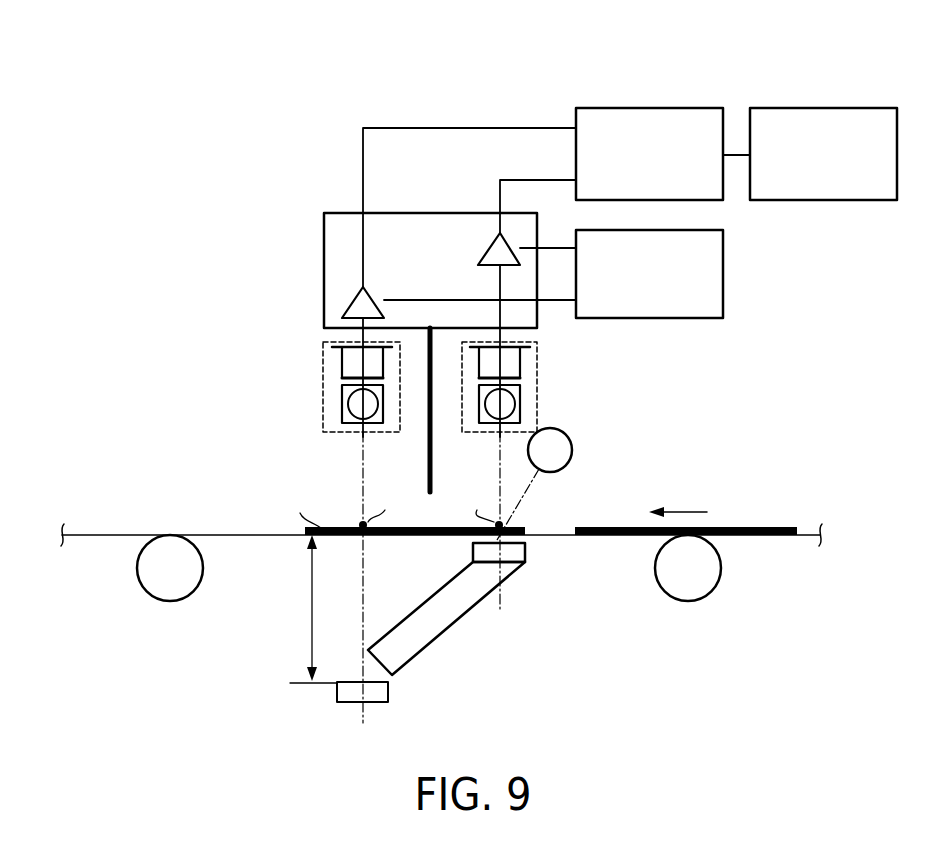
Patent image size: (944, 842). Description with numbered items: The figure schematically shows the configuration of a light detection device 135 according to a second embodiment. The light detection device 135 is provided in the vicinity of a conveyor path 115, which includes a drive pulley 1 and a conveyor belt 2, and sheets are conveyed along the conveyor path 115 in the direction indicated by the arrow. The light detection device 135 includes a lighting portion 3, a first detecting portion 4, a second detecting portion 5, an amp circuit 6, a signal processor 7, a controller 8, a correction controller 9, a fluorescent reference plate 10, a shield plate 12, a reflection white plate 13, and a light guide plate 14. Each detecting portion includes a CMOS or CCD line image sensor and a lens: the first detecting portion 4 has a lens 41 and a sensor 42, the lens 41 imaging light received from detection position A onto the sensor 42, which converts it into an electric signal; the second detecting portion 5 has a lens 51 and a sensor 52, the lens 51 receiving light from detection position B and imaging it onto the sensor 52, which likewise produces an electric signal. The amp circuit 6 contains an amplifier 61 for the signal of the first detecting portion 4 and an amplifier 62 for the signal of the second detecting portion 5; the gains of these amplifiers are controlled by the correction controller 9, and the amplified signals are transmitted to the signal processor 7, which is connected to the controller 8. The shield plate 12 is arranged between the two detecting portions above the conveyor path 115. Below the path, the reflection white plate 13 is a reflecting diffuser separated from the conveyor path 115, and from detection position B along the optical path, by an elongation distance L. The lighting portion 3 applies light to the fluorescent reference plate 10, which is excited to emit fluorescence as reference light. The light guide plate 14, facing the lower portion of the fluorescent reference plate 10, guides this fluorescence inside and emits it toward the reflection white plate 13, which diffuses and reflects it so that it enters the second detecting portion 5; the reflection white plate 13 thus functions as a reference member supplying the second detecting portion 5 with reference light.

The light detection device 135 is at (488, 78).
The signal processor 7 is at (667, 107).
The controller 8 is at (842, 107).
The correction controller 9 is at (723, 273).
The amp circuit 6 is at (324, 268).
The amplifier 61 is at (490, 247).
The amplifier 62 is at (373, 300).
The second detecting portion 5 is at (323, 377).
The sensor 52 is at (342, 364).
The lens 51 is at (342, 405).
The first detecting portion 4 is at (537, 377).
The sensor 42 is at (520, 364).
The lens 41 is at (520, 405).
The shield plate 12 is at (428, 459).
The lighting portion 3 is at (573, 449).
The conveyor belt 2 is at (218, 533).
The drive pulley 1 is at (142, 586).
The conveyor path 115 is at (250, 546).
The fluorescent reference plate 10 is at (525, 553).
The light guide plate 14 is at (445, 632).
The reflection white plate 13 is at (336, 692).